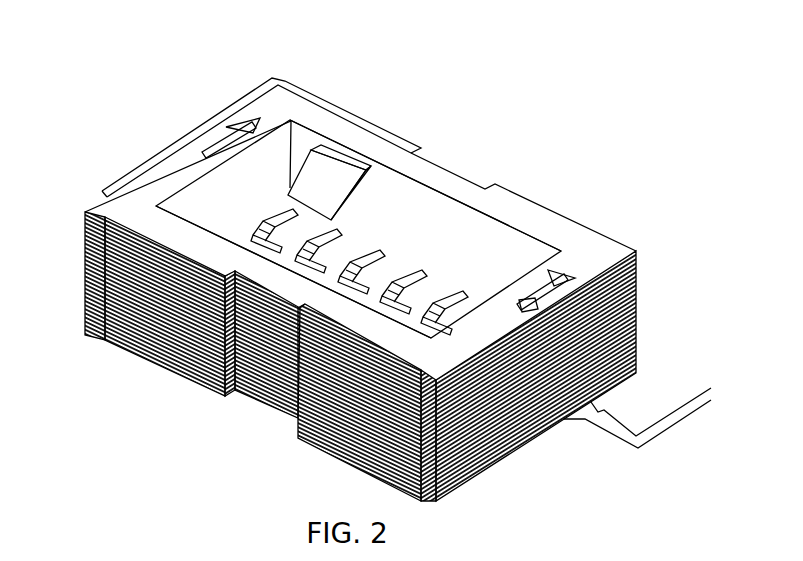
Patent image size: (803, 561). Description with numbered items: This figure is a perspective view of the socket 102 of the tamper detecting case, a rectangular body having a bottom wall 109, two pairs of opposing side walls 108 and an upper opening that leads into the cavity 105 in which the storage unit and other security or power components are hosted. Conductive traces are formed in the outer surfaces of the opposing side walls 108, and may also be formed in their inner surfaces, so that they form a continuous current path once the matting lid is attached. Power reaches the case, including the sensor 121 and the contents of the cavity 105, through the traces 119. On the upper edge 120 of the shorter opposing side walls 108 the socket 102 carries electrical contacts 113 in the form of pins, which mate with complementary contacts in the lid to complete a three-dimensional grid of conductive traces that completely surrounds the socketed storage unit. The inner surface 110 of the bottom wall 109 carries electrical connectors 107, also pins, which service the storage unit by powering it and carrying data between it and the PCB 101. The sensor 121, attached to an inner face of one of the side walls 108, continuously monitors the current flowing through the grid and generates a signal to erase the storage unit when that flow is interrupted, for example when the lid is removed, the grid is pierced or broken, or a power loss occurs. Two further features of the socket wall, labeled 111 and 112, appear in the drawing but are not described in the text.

The PCB 101 is at (398, 270).
The socket 102 is at (382, 330).
The cavity 105 is at (362, 192).
The electrical connectors 107 is at (283, 232).
The opposing side walls 108 is at (195, 333).
The bottom wall 109 is at (310, 440).
The inner surface of the bottom wall 110 is at (432, 268).
The inner side wall 111 is at (217, 372).
The protruding portion 112 is at (262, 395).
The electrical contacts 113 is at (215, 140).
The traces 119 is at (228, 98).
The upper edge 120 is at (398, 268).
The sensor 121 is at (293, 157).